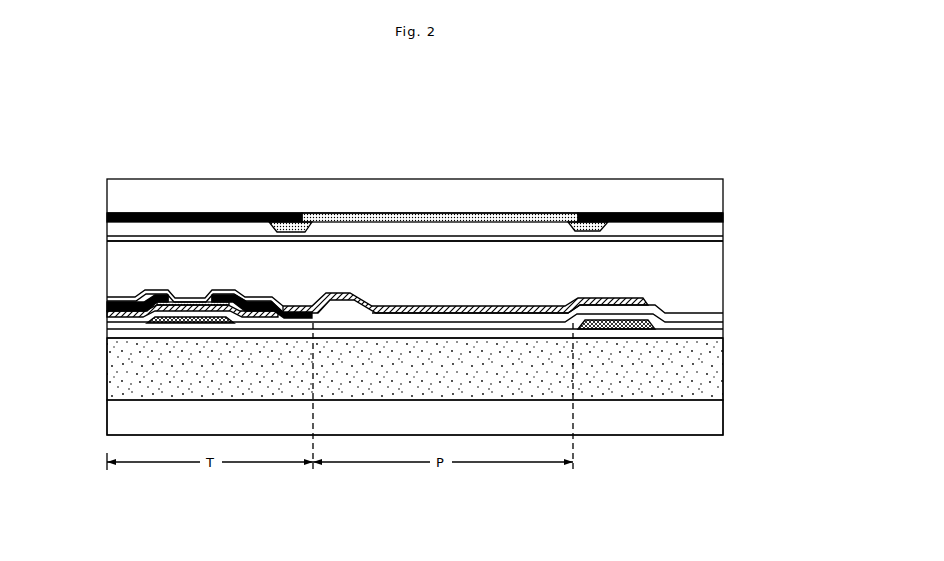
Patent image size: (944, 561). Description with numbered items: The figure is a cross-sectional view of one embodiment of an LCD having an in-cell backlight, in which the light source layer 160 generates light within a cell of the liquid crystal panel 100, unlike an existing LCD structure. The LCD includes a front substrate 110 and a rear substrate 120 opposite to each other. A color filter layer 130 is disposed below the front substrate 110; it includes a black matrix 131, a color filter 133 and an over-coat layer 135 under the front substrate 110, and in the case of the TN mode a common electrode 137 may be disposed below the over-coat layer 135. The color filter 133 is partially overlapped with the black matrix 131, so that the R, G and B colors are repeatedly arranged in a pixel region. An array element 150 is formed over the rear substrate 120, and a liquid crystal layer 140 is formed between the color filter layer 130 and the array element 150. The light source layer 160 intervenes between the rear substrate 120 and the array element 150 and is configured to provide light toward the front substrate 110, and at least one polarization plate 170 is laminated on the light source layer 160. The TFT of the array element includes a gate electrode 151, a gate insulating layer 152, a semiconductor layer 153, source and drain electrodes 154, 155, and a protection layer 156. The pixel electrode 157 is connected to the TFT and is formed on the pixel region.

The liquid crystal panel 100 is at (818, 190).
The front substrate 110 is at (713, 189).
The rear substrate 120 is at (713, 412).
The color filter layer 130 is at (451, 184).
The black matrix 131 is at (281, 213).
The color filter 133 is at (337, 213).
The over-coat layer 135 is at (391, 223).
The common electrode 137 is at (438, 238).
The liquid crystal layer 140 is at (713, 270).
The array element 150 is at (419, 250).
The gate electrode 151 is at (160, 328).
The gate insulating layer 152 is at (115, 319).
The semiconductor layer 153 is at (113, 313).
The source electrode 154 is at (113, 306).
The drain electrode 155 is at (200, 300).
The protection layer 156 is at (113, 300).
The pixel electrode 157 is at (550, 305).
The light source layer 160 is at (713, 375).
The polarization plate 170 is at (713, 333).